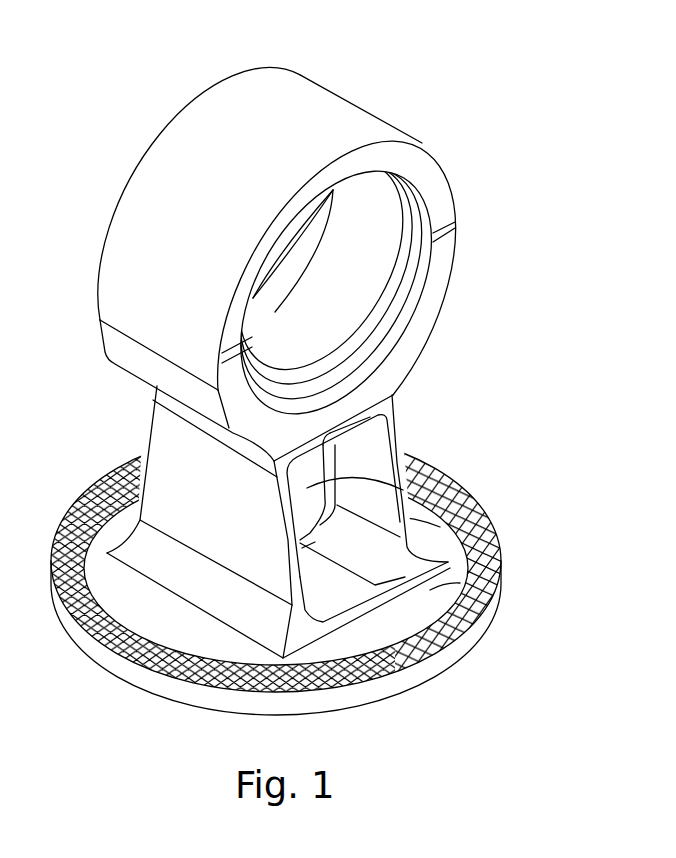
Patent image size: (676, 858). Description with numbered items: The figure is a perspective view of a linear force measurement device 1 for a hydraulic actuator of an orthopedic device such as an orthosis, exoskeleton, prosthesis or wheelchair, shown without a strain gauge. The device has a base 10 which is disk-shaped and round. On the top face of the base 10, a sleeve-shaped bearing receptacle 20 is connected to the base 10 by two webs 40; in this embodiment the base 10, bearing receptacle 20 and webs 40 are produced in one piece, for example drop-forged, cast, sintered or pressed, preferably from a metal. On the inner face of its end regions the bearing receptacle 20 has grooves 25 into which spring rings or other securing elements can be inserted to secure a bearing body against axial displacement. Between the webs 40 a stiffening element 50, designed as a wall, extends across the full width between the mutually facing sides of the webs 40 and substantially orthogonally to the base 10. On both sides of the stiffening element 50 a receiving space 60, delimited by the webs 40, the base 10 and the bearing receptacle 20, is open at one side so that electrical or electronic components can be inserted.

The linear force measurement device 1 is at (310, 375).
The base 10 is at (310, 572).
The bearing receptacle 20 is at (305, 248).
The grooves 25 is at (325, 240).
The webs 40 is at (177, 463).
The stiffening element 50 is at (498, 533).
The receiving space 60 is at (503, 568).